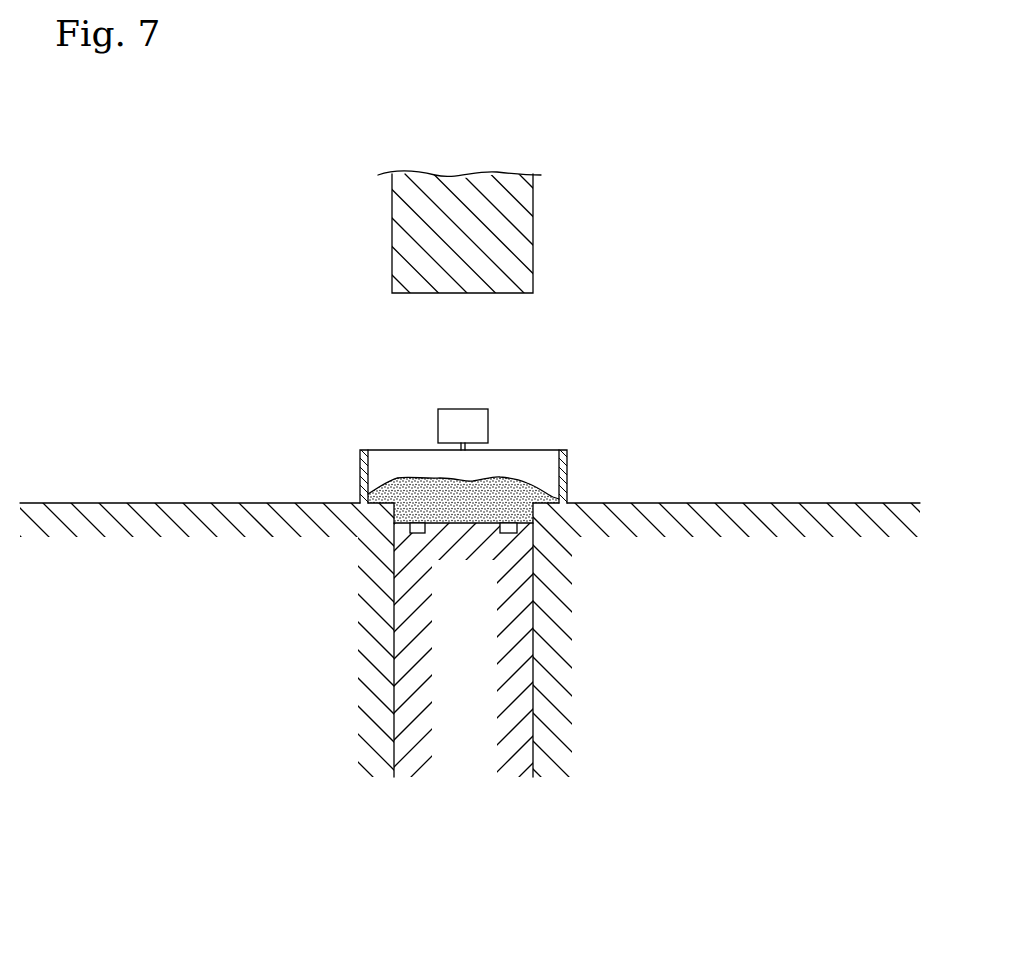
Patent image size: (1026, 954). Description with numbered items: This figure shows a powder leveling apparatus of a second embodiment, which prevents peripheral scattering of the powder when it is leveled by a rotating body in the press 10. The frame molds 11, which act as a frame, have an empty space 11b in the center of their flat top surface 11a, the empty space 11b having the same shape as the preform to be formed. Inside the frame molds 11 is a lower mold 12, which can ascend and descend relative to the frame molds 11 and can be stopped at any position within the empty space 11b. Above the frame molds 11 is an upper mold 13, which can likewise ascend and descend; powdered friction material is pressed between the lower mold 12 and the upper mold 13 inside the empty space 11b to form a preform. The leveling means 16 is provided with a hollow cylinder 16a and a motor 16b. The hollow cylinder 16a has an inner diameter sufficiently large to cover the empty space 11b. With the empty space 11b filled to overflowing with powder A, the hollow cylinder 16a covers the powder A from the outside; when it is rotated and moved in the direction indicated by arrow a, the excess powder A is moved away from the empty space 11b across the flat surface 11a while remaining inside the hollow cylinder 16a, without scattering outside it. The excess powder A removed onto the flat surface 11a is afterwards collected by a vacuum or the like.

The press 10 is at (285, 276).
The frame molds 11 is at (255, 638).
The flat top surface 11a is at (751, 503).
The empty space 11b is at (558, 481).
The lower mold 12 is at (513, 675).
The upper mold 13 is at (534, 232).
The leveling means 16 is at (558, 392).
The hollow cylinder 16a is at (360, 477).
The motor 16b is at (450, 409).
The powder A is at (471, 524).
The arrow a is at (240, 465).